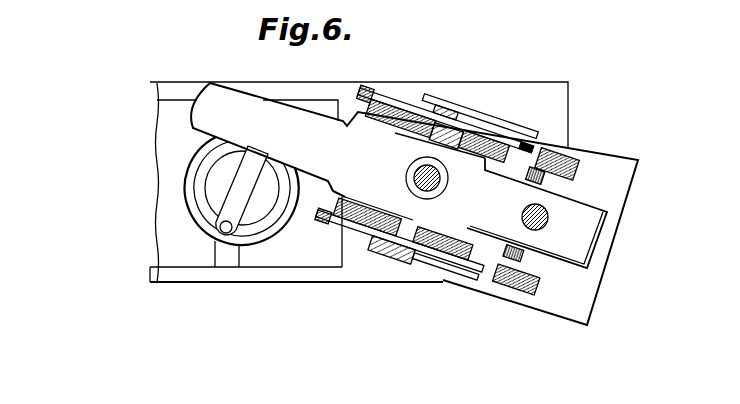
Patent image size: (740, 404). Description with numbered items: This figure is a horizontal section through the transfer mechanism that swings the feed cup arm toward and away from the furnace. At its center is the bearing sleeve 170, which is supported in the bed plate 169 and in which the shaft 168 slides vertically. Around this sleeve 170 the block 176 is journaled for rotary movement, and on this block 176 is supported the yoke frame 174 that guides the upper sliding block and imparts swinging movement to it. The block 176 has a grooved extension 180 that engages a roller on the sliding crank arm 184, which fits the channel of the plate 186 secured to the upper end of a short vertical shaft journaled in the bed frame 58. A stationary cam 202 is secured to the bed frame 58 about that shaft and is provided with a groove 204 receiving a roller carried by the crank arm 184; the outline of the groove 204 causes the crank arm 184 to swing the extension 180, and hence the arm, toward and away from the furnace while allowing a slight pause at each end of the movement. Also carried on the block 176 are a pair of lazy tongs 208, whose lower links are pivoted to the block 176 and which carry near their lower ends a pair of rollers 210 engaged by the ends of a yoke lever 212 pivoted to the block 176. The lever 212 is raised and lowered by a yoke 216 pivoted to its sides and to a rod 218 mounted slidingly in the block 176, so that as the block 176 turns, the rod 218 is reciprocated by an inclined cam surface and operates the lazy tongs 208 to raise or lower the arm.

The bed frame 58 is at (172, 257).
The shaft 168 is at (440, 194).
The bed plate 169 is at (363, 277).
The bearing sleeve 170 is at (408, 178).
The yoke frame 174 is at (388, 112).
The block 176 is at (580, 233).
The grooved extension 180 is at (212, 97).
The sliding crank arm 184 is at (239, 267).
The plate 186 is at (232, 177).
The stationary cam 202 is at (197, 153).
The groove 204 is at (202, 198).
The lazy tongs 208 is at (490, 122).
The rollers 210 is at (410, 258).
The yoke lever 212 is at (497, 124).
The yoke 216 is at (572, 160).
The rod 218 is at (543, 233).